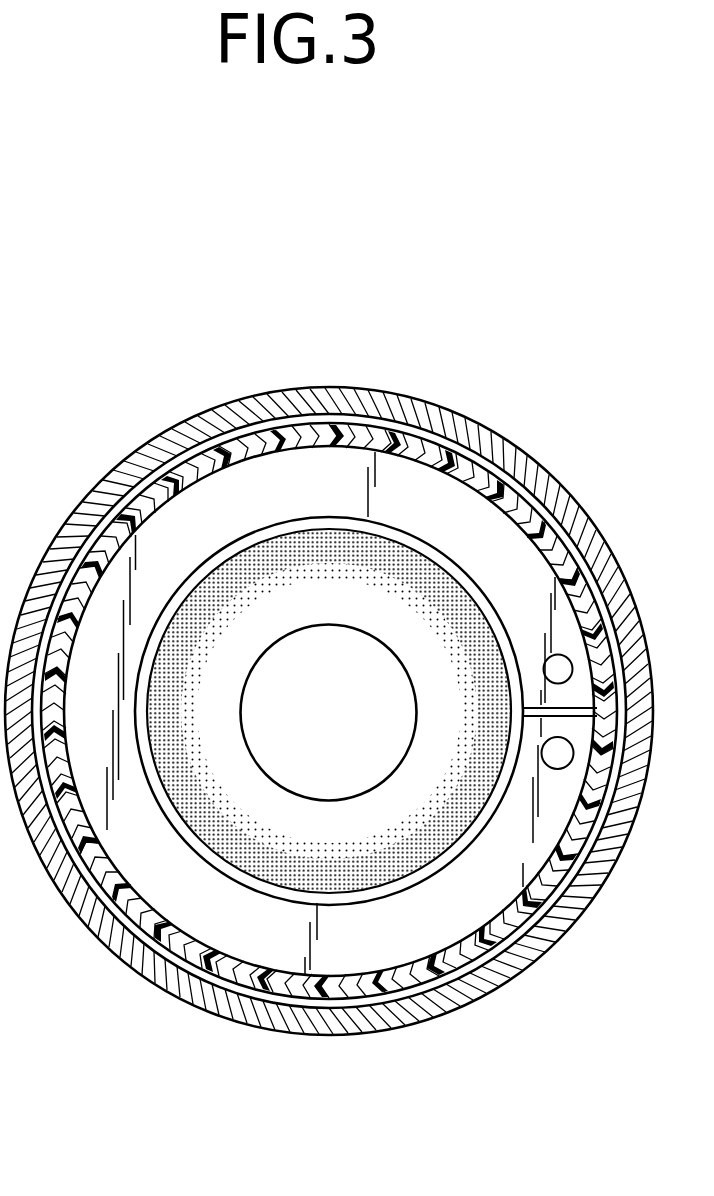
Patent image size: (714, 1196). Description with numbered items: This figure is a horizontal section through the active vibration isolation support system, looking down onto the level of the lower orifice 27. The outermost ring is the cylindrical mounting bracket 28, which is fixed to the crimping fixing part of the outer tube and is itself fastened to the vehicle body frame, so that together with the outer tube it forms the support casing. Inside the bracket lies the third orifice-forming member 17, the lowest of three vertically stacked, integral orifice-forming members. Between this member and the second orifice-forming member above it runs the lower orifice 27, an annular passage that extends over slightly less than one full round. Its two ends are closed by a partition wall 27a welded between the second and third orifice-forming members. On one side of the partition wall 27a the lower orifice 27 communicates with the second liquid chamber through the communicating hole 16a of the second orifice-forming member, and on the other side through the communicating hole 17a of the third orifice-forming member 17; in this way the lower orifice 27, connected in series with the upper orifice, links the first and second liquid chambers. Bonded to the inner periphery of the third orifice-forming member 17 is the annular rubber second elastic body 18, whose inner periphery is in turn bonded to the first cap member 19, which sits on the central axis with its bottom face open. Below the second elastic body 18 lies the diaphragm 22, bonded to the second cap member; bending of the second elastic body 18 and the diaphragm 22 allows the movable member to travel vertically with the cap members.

The cylindrical mounting bracket 28 is at (503, 445).
The diaphragm 22 is at (197, 467).
The lower orifice 27 is at (292, 505).
The second elastic body 18 is at (250, 815).
The first cap member 19 is at (343, 728).
The third orifice-forming member 17 is at (329, 527).
The partition wall 27a is at (524, 722).
The communicating hole 16a is at (572, 672).
The communicating hole 17a is at (540, 766).